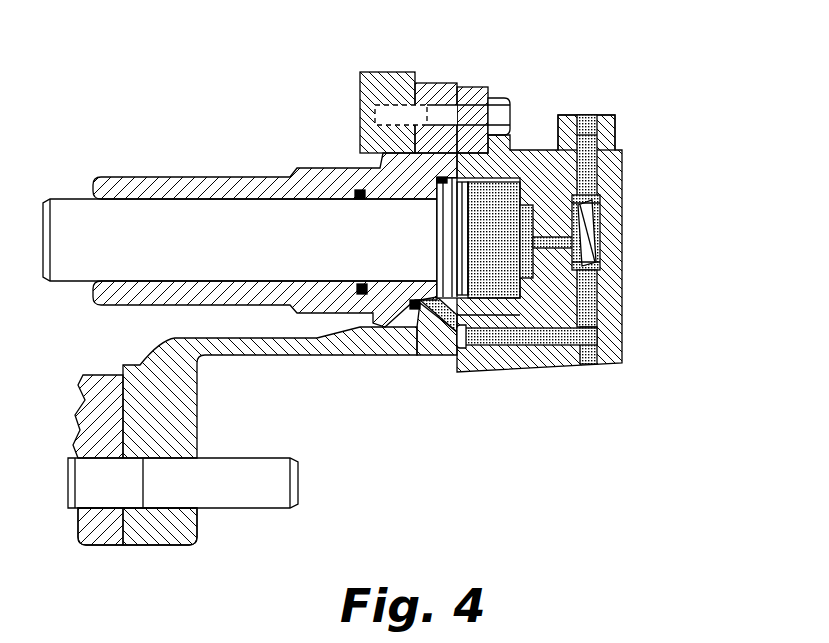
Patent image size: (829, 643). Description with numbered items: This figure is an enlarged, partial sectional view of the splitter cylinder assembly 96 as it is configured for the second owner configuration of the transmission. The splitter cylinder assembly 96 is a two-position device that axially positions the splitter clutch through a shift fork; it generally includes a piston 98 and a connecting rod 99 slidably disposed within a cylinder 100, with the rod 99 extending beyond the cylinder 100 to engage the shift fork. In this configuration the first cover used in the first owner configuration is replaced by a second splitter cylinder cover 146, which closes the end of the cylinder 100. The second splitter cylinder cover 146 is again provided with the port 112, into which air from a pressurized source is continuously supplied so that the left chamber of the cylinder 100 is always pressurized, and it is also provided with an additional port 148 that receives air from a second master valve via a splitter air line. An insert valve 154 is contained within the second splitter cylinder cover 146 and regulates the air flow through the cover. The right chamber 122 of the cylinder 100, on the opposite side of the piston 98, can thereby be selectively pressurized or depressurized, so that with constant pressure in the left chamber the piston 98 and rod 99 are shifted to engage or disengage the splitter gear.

The splitter cylinder assembly 96 is at (263, 126).
The connecting rod 99 is at (307, 248).
The splitter cylinder 100 is at (155, 177).
The right chamber 122 is at (497, 213).
The additional port 148 is at (590, 115).
The insert valve 154 is at (610, 217).
The second splitter cylinder cover 146 is at (622, 248).
The port 112 is at (588, 368).
The piston 98 is at (453, 268).